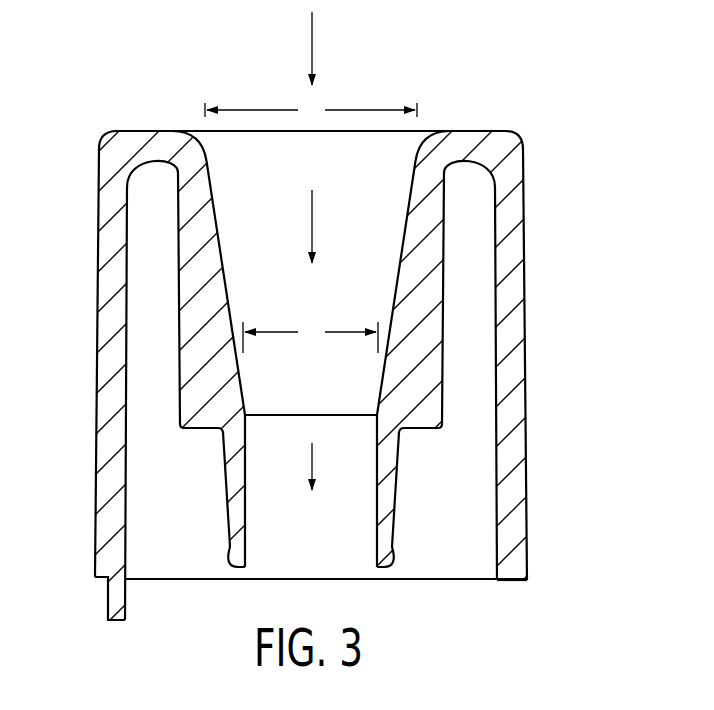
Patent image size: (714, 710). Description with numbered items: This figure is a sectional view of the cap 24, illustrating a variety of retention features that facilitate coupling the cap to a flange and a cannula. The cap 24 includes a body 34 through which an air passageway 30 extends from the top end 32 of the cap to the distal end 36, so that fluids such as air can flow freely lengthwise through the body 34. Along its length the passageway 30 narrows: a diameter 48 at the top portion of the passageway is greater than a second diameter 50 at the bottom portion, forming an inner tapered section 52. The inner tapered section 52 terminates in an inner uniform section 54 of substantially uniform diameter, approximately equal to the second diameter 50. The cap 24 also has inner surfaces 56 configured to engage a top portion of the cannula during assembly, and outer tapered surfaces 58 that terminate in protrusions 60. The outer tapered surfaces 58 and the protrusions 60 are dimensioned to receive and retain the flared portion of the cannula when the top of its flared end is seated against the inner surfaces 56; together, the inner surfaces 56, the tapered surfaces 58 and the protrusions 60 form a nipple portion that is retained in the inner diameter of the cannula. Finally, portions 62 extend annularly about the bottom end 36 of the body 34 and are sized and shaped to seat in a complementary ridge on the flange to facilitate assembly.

The cap 24 is at (357, 343).
The air passageway 30 is at (313, 57).
The top end 32 is at (537, 123).
The body 34 is at (528, 365).
The distal end 36 is at (444, 599).
The diameter 48 is at (311, 111).
The second diameter 50 is at (310, 335).
The inner tapered section 52 is at (230, 261).
The inner uniform section 54 is at (250, 496).
The inner surfaces 56 is at (202, 434).
The outer tapered surfaces 58 is at (223, 485).
The protrusions 60 is at (222, 553).
The portions 62 is at (100, 590).